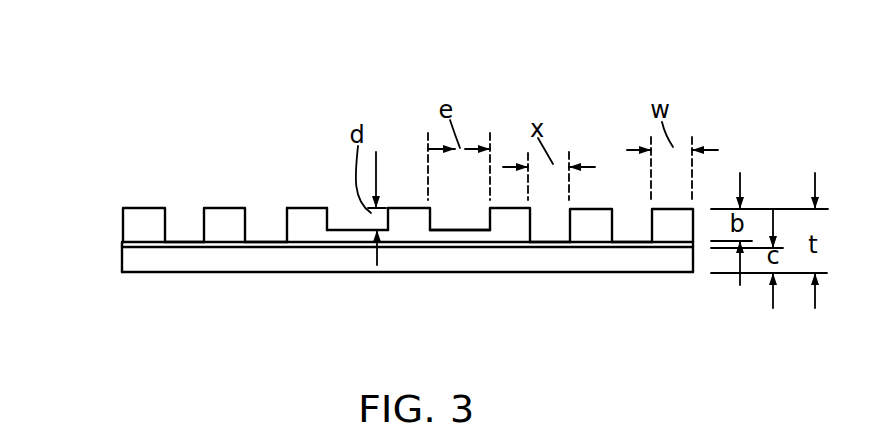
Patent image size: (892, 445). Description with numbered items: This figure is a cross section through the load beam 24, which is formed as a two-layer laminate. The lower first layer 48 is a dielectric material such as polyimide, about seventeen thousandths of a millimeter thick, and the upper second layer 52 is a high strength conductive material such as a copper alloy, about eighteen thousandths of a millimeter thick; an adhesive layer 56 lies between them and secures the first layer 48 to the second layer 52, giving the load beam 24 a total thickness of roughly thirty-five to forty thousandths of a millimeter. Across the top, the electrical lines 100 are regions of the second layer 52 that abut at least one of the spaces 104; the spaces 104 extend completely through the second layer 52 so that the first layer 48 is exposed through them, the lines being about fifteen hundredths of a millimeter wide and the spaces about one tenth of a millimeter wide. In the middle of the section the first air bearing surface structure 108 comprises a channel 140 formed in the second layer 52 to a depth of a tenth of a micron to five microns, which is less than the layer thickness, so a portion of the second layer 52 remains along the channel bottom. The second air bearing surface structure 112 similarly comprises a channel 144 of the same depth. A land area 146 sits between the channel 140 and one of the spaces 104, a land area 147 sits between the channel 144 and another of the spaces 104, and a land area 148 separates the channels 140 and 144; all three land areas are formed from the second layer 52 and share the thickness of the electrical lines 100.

The load beam 24 is at (240, 275).
The first layer 48 is at (122, 262).
The second layer 52 is at (123, 211).
The adhesive layer 56 is at (122, 244).
The electrical lines 100 is at (135, 208).
The spaces 104 is at (180, 232).
The first air bearing surface structure 108 is at (334, 212).
The second air bearing surface structure 112 is at (462, 210).
The channel 140 is at (345, 232).
The channel 144 is at (455, 231).
The land area 146 is at (300, 208).
The land area 147 is at (507, 209).
The land area 148 is at (420, 208).